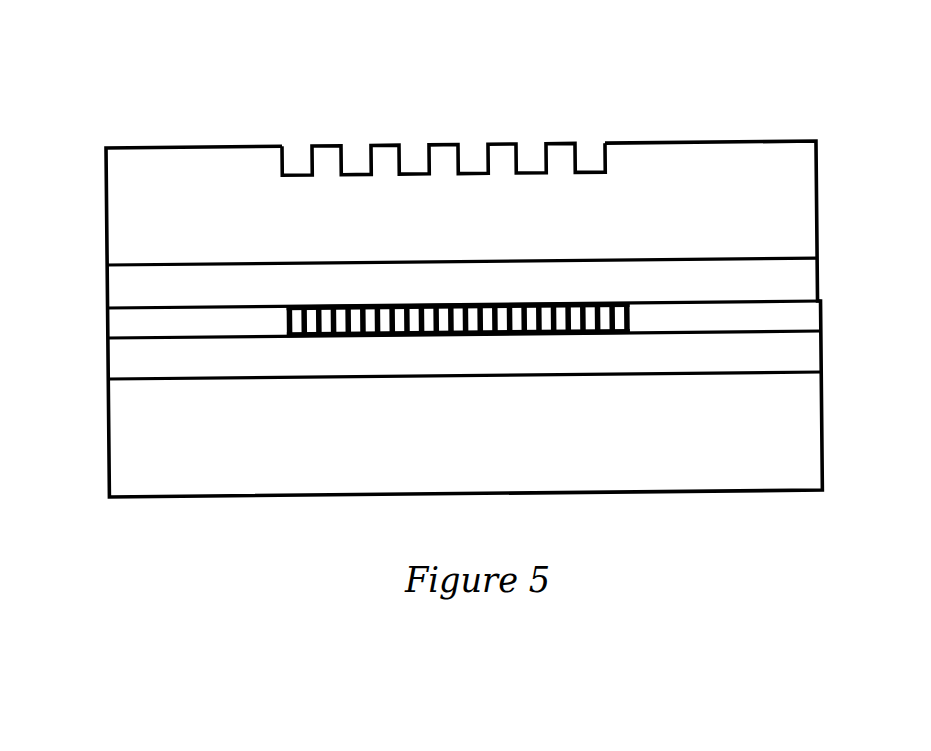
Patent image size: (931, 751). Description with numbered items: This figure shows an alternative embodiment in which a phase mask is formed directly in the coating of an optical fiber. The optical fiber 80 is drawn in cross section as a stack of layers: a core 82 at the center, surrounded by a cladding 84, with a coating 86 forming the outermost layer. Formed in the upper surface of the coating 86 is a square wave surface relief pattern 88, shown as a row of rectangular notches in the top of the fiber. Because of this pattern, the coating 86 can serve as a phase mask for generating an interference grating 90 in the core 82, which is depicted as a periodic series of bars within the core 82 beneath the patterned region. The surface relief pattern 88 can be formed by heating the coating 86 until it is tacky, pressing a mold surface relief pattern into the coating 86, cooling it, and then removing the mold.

The optical fiber 80 is at (154, 128).
The core 82 is at (106, 323).
The cladding 84 is at (696, 288).
The coating 86 is at (701, 224).
The square wave surface relief pattern 88 is at (479, 138).
The interference grating 90 is at (287, 309).